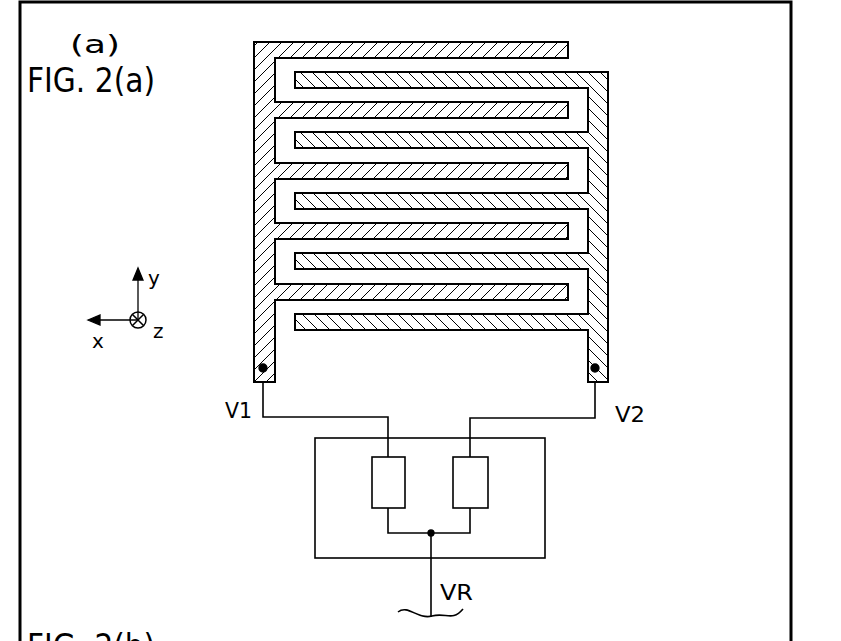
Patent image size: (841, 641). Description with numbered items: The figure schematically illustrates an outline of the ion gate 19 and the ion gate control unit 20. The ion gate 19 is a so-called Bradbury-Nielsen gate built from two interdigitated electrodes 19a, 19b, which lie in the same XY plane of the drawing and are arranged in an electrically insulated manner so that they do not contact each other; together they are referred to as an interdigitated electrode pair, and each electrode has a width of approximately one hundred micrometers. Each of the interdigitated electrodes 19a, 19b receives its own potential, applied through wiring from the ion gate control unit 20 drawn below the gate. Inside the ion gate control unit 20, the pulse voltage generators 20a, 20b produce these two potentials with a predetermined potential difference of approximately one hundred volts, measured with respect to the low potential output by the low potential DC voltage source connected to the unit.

The ion gate 19 is at (444, 212).
The interdigitated electrode 19a is at (254, 120).
The interdigitated electrode 19b is at (608, 138).
The ion gate control unit 20 is at (431, 527).
The pulse voltage generator 20a is at (372, 487).
The pulse voltage generator 20b is at (490, 483).